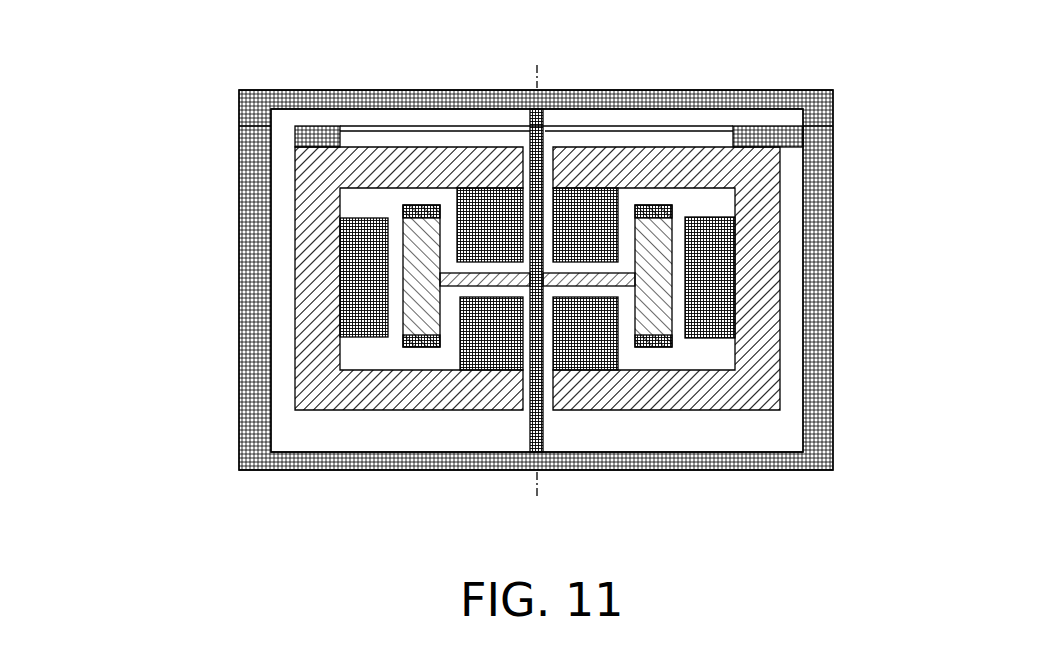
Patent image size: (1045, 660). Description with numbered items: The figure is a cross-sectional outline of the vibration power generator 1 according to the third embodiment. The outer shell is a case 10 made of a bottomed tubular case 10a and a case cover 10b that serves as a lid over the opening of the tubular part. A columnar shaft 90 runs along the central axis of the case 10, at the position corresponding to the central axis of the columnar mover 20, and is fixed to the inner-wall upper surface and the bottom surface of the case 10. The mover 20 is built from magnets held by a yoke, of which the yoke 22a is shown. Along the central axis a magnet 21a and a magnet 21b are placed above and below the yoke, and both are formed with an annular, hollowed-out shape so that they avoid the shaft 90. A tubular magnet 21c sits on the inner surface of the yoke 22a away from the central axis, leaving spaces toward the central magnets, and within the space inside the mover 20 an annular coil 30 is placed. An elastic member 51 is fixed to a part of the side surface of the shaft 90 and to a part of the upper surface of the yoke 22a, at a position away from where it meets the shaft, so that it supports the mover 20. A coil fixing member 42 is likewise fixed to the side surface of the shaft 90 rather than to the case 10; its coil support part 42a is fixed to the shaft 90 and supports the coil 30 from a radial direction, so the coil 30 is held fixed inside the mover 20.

The vibration power generator 1 is at (800, 60).
The case 10 is at (107, 40).
The bottomed tubular case 10a is at (255, 150).
The case cover 10b is at (287, 100).
The mover 20 is at (792, 156).
The magnet 21a is at (457, 213).
The magnet 21b is at (480, 345).
The tubular magnet 21c is at (358, 307).
The yoke 22a is at (318, 287).
The coil 30 is at (388, 263).
The coil fixing member 42 is at (405, 347).
The coil support part 42a is at (447, 303).
The elastic member 51 is at (780, 133).
The shaft 90 is at (547, 427).